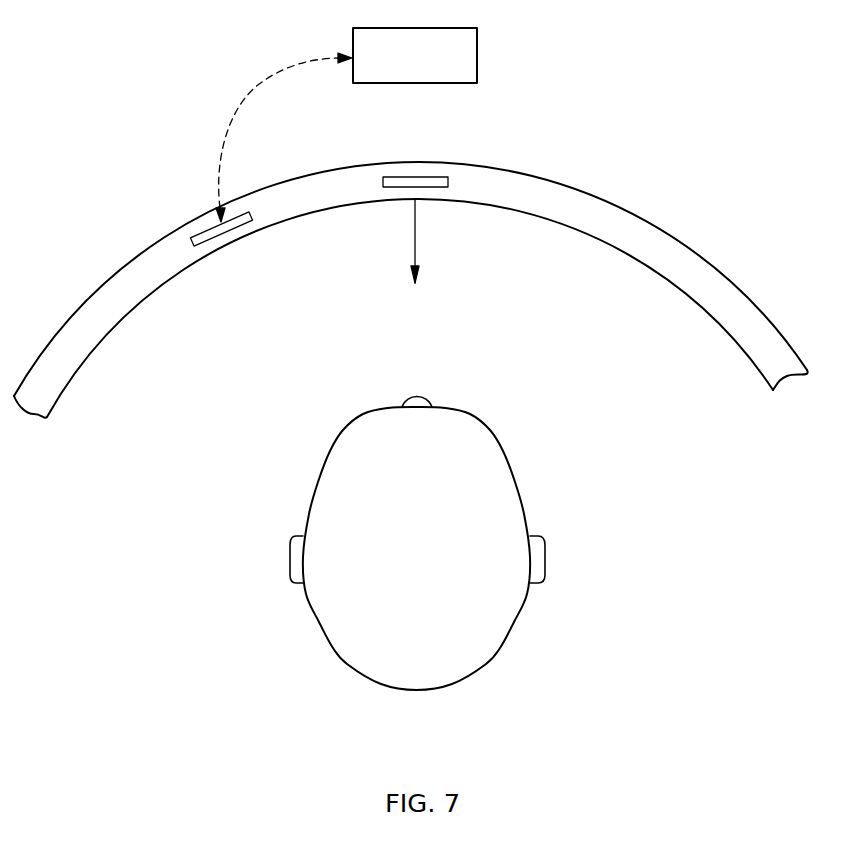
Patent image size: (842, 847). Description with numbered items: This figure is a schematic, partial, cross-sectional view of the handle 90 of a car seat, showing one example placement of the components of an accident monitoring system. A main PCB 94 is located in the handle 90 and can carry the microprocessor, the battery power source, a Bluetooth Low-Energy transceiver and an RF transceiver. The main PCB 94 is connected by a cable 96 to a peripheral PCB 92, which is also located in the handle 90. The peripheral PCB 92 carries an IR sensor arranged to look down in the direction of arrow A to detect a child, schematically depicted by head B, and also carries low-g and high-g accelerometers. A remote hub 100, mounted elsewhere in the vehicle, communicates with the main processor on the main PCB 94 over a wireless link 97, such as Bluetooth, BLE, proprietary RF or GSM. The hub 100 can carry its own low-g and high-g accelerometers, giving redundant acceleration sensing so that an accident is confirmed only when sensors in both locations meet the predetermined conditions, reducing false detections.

The handle 90 is at (660, 237).
The peripheral PCB 92 is at (443, 178).
The main PCB 94 is at (202, 233).
The cable 96 is at (352, 185).
The wireless link 97 is at (247, 92).
The hub 100 is at (477, 43).
The arrow A is at (415, 237).
The head B is at (515, 617).